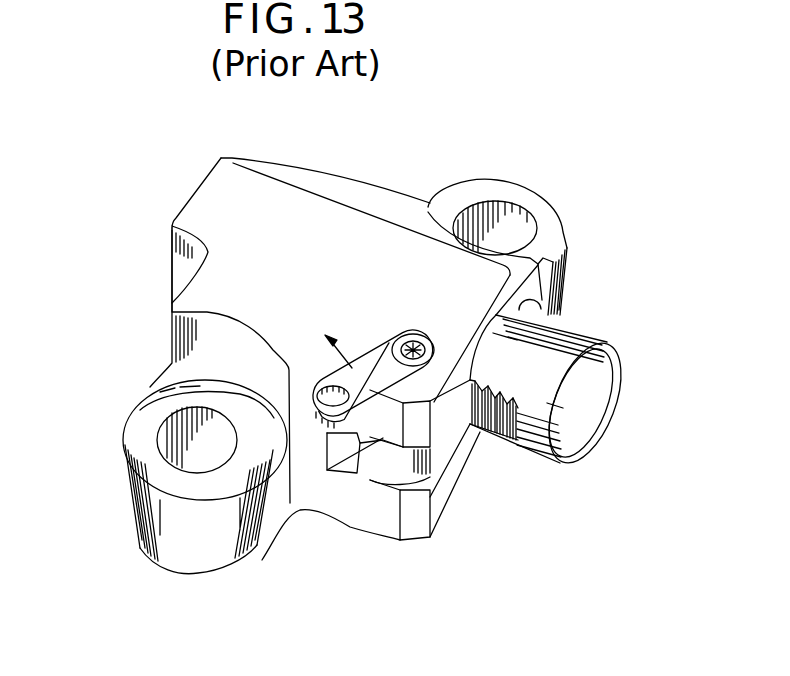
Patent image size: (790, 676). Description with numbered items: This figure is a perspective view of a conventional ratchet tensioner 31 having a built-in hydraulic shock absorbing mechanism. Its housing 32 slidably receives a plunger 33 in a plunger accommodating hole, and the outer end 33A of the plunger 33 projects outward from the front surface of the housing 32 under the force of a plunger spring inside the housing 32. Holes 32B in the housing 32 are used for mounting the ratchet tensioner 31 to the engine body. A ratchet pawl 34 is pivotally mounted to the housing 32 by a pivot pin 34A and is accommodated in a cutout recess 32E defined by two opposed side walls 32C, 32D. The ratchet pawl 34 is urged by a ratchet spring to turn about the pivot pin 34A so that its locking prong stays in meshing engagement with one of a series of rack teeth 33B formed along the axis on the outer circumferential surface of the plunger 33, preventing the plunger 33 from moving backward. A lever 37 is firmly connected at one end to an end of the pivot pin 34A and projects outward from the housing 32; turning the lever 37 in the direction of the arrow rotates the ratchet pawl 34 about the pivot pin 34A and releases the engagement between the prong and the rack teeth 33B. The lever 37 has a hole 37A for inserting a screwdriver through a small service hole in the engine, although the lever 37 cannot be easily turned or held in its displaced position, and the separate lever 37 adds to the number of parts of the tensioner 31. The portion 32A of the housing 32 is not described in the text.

The ratchet tensioner 31 is at (404, 171).
The housing 32 is at (247, 203).
The mounting block 32A is at (383, 432).
The holes 32B is at (513, 230).
The side wall 32C is at (420, 428).
The side wall 32D is at (413, 527).
The cutout recess 32E is at (343, 476).
The plunger 33 is at (550, 352).
The outer end 33A is at (570, 380).
The rack teeth 33B is at (507, 440).
The ratchet pawl 34 is at (453, 433).
The pivot pin 34A is at (413, 350).
The lever 37 is at (367, 367).
The hole 37A is at (333, 396).